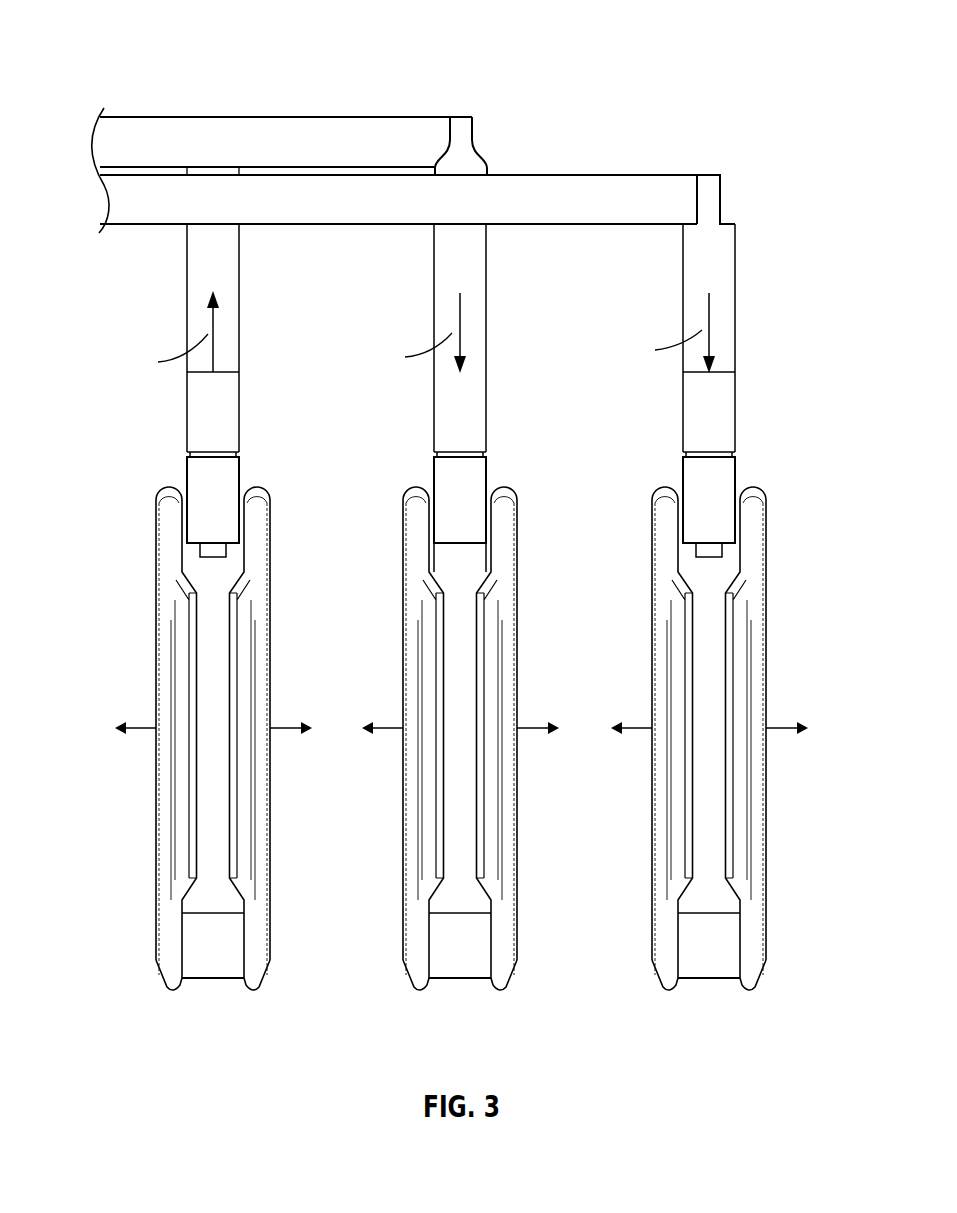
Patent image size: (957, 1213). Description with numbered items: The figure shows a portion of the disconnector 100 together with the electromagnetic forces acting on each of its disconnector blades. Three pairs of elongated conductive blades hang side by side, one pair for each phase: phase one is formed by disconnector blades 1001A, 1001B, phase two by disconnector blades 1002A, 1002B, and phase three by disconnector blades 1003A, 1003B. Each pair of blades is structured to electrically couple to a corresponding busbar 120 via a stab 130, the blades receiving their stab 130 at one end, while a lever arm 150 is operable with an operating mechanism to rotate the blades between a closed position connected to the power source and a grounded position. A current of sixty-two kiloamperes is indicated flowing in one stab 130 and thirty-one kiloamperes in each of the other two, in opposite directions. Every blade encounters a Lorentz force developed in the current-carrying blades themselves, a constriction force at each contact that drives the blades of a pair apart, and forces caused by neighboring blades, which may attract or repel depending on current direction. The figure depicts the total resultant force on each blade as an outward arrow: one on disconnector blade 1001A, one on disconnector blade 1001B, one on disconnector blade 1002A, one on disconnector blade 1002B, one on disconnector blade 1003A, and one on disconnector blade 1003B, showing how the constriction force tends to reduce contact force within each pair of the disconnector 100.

The disconnector 100 is at (190, 41).
The busbar 120 is at (197, 117).
The stab 130 is at (198, 410).
The lever arm 150 is at (198, 970).
The disconnector blade 1001A is at (764, 512).
The disconnector blade 1001B is at (660, 520).
The disconnector blade 1002A is at (516, 512).
The disconnector blade 1002B is at (412, 522).
The disconnector blade 1003A is at (270, 512).
The disconnector blade 1003B is at (163, 522).